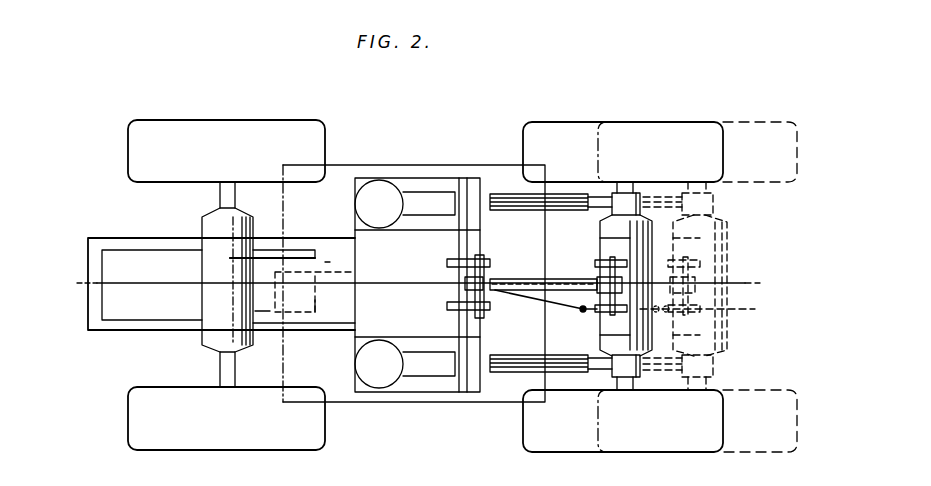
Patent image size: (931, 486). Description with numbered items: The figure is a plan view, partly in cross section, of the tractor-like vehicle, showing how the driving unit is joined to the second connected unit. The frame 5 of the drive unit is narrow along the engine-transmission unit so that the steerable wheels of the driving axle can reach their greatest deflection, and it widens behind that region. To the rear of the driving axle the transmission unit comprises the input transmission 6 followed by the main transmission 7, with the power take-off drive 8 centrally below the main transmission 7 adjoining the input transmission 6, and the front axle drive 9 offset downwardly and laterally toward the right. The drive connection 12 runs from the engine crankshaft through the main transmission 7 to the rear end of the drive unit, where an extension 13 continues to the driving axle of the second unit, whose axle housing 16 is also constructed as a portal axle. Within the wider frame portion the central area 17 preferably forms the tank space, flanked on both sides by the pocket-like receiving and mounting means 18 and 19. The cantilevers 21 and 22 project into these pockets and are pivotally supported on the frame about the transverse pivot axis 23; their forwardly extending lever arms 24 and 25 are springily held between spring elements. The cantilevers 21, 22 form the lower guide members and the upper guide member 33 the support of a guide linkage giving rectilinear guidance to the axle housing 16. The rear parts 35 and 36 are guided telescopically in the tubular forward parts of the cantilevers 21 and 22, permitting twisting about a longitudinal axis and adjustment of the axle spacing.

The frame 5 is at (80, 338).
The input transmission 6 is at (262, 303).
The main transmission 7 is at (326, 303).
The power take-off drive 8 is at (299, 334).
The front axle drive 9 is at (330, 262).
The drive connection 12 is at (373, 276).
The extension 13 is at (548, 302).
The axle housing 16 is at (612, 322).
The central area 17 is at (409, 282).
The receiving and mounting means 18 is at (420, 190).
The receiving and mounting means 19 is at (405, 388).
The cantilever 21 is at (479, 200).
The cantilever 22 is at (481, 378).
The pivot axis 23 is at (460, 386).
The lever arm 24 is at (437, 203).
The lever arm 25 is at (420, 368).
The upper guide member 33 is at (522, 281).
The rear part 35 is at (597, 208).
The rear part 36 is at (597, 382).